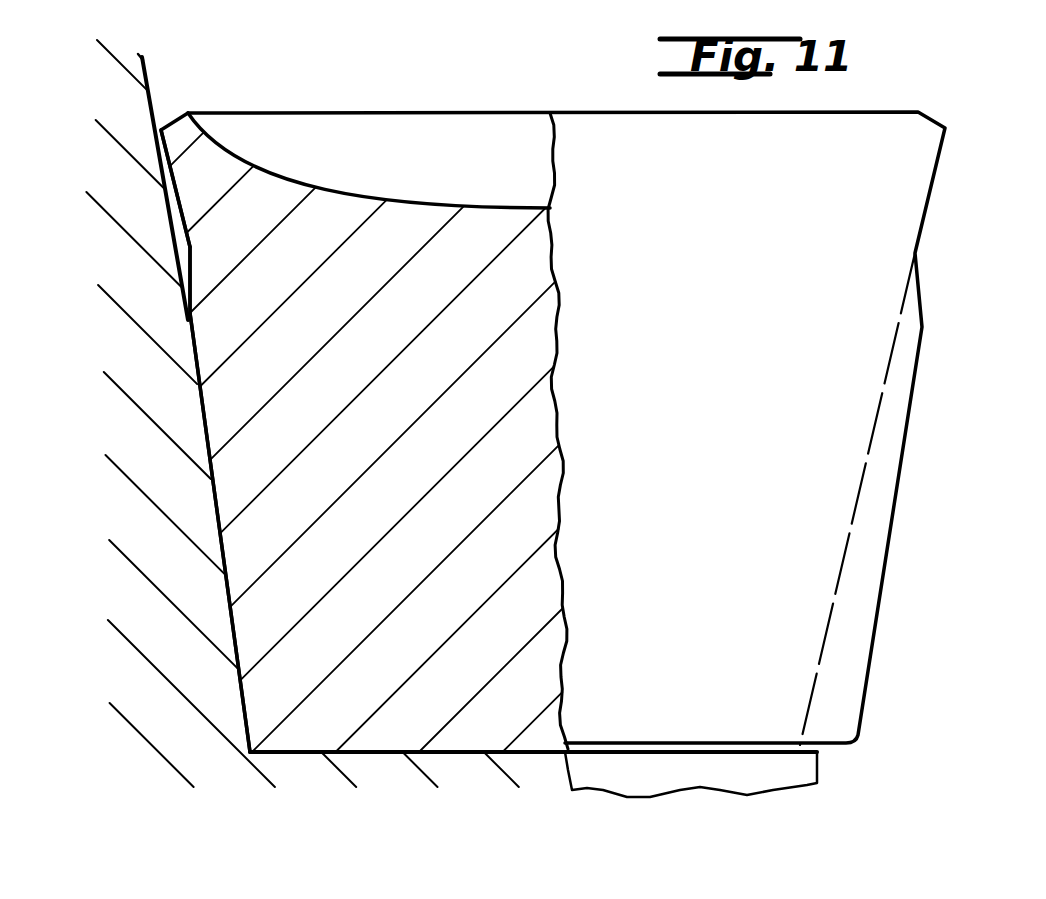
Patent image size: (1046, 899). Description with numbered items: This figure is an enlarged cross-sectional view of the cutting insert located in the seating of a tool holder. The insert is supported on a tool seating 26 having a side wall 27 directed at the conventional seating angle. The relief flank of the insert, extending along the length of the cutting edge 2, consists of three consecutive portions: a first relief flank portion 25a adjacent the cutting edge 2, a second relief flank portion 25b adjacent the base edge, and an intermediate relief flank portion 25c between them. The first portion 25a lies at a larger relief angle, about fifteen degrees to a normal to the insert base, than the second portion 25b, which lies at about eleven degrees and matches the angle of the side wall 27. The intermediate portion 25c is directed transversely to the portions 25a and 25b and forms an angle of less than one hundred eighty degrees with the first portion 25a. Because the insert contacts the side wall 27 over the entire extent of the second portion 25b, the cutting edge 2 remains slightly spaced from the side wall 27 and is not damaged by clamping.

The cutting edge 2 is at (161, 128).
The first relief flank portion 25a is at (172, 192).
The second relief flank portion 25b is at (212, 510).
The intermediate relief flank portion 25c is at (190, 260).
The tool seating 26 is at (819, 773).
The side wall 27 is at (148, 58).